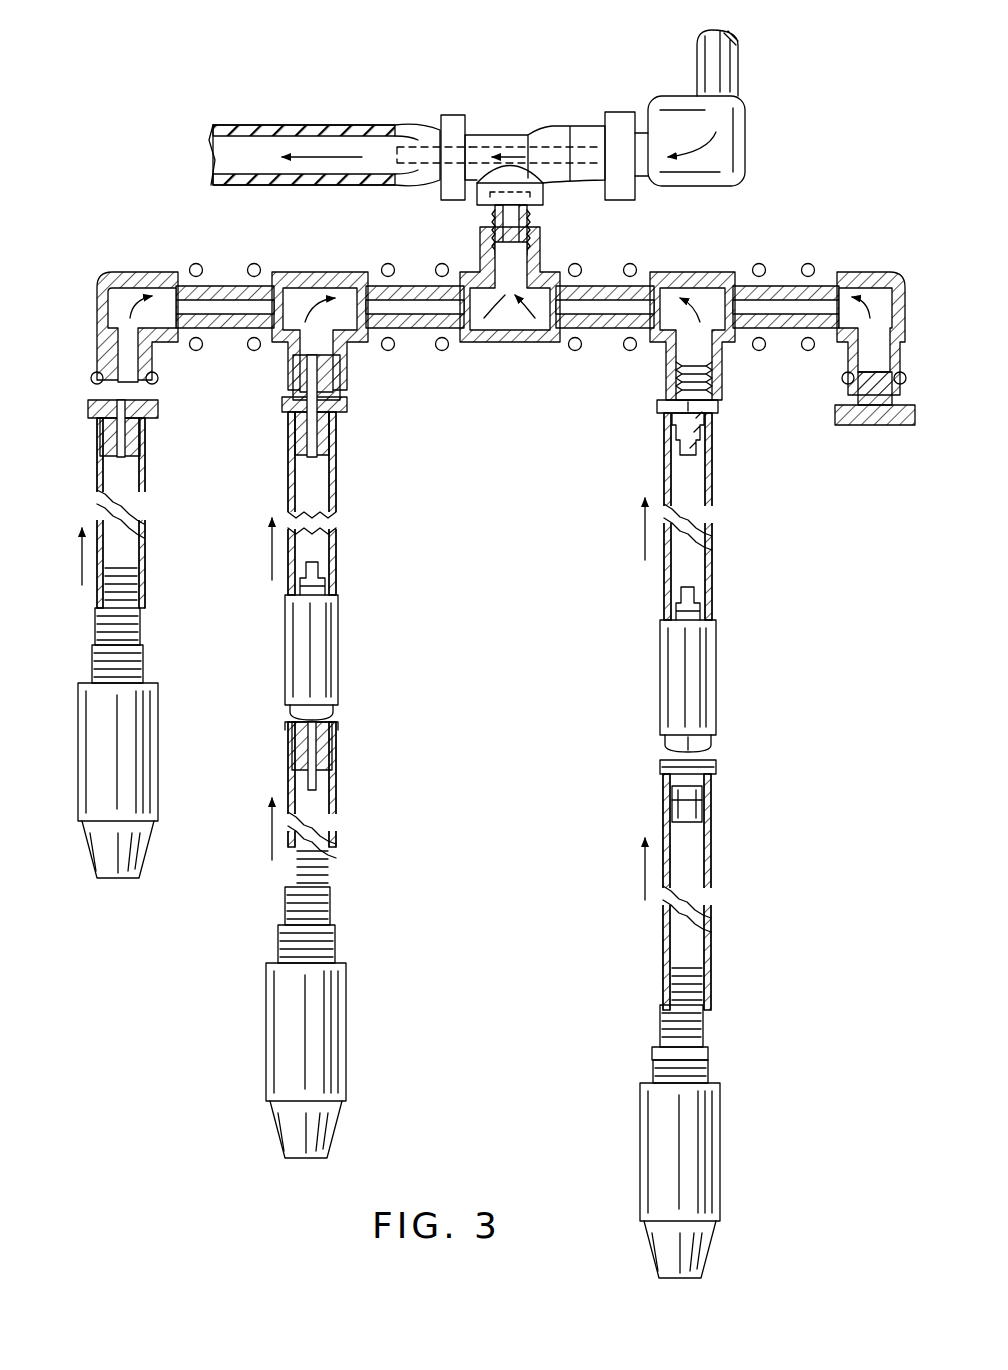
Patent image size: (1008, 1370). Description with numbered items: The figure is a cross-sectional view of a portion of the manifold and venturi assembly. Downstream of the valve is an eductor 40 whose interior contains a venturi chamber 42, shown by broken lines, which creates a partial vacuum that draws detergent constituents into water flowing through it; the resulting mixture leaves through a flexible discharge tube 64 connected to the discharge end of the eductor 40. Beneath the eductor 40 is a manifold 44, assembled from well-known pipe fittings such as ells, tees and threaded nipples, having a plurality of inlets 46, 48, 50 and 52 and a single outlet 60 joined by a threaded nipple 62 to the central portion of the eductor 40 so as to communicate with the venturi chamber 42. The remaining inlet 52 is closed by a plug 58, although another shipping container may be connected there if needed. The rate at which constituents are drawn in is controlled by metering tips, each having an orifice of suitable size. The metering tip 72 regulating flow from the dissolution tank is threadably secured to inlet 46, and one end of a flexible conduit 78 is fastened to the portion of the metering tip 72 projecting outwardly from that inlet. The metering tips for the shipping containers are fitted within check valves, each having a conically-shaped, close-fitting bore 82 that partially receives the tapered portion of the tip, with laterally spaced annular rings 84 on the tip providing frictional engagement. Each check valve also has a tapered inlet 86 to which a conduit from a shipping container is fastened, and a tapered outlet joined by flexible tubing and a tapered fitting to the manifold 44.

The eductor 40 is at (548, 128).
The venturi chamber 42 is at (557, 176).
The manifold 44 is at (812, 194).
The inlet 46 is at (90, 375).
The inlet 48 is at (284, 389).
The inlet 50 is at (652, 400).
The inlet 52 is at (828, 404).
The plug 58 is at (880, 427).
The outlet 60 is at (478, 212).
The threaded nipple 62 is at (496, 220).
The discharge tube 64 is at (302, 125).
The metering tip 72 is at (142, 441).
The flexible conduit 78 is at (147, 507).
The bore 82 is at (324, 742).
The annular rings 84 is at (292, 750).
The tapered inlet 86 is at (300, 717).